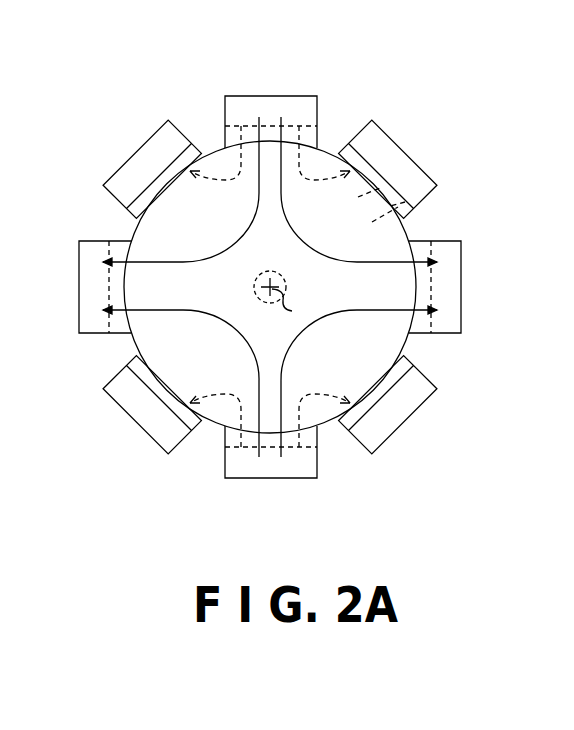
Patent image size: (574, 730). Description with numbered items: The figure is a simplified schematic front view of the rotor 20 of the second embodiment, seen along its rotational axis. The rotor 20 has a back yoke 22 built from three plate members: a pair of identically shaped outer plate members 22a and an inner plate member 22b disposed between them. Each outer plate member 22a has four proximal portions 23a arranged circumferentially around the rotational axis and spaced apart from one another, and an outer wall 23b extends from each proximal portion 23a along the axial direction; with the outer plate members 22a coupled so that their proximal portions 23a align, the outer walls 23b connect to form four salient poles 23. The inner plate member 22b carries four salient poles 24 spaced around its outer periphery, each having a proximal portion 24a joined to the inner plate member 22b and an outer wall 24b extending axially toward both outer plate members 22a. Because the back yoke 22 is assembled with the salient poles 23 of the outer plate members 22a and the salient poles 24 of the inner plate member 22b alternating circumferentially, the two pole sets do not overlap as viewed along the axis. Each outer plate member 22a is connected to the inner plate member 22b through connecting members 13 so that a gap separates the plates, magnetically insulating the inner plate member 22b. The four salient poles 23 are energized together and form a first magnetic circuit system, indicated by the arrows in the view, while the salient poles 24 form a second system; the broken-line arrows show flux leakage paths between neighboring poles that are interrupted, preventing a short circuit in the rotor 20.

The rotor 20 is at (172, 119).
The connecting member 13 is at (270, 272).
The back yoke 22 is at (446, 203).
The outer plate member 22a is at (388, 178).
The inner plate member 22b is at (405, 202).
The salient pole 23 is at (271, 288).
The proximal portion 23a is at (317, 46).
The outer wall 23b is at (289, 96).
The salient pole 24 is at (240, 294).
The proximal portion 24a is at (138, 198).
The outer wall 24b is at (145, 157).